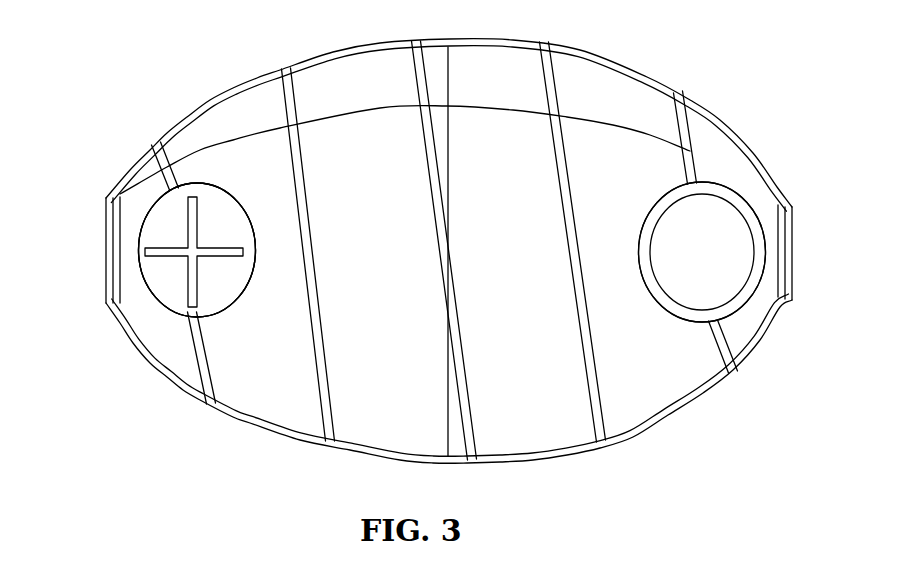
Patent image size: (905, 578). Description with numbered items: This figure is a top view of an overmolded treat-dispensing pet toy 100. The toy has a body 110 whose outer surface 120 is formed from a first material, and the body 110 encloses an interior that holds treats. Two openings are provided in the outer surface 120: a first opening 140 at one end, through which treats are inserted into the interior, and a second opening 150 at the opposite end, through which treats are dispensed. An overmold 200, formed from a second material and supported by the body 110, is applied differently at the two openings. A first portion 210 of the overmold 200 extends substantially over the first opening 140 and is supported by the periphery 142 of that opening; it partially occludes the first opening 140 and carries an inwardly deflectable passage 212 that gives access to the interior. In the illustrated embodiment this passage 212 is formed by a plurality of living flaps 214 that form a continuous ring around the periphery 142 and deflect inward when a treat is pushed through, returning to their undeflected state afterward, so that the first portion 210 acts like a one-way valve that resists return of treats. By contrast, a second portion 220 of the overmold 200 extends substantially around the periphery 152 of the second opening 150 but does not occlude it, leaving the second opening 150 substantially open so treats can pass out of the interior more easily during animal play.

The pet toy 100 is at (93, 86).
The body 110 is at (282, 403).
The outer surface 120 is at (392, 428).
The first opening 140 is at (151, 212).
The periphery 142 is at (255, 227).
The second opening 150 is at (728, 205).
The periphery 152 is at (662, 194).
The overmold 200 is at (407, 43).
The first portion 210 is at (217, 213).
The inwardly deflectable passage 212 is at (172, 268).
The living flaps 214 is at (217, 285).
The second portion 220 is at (668, 309).